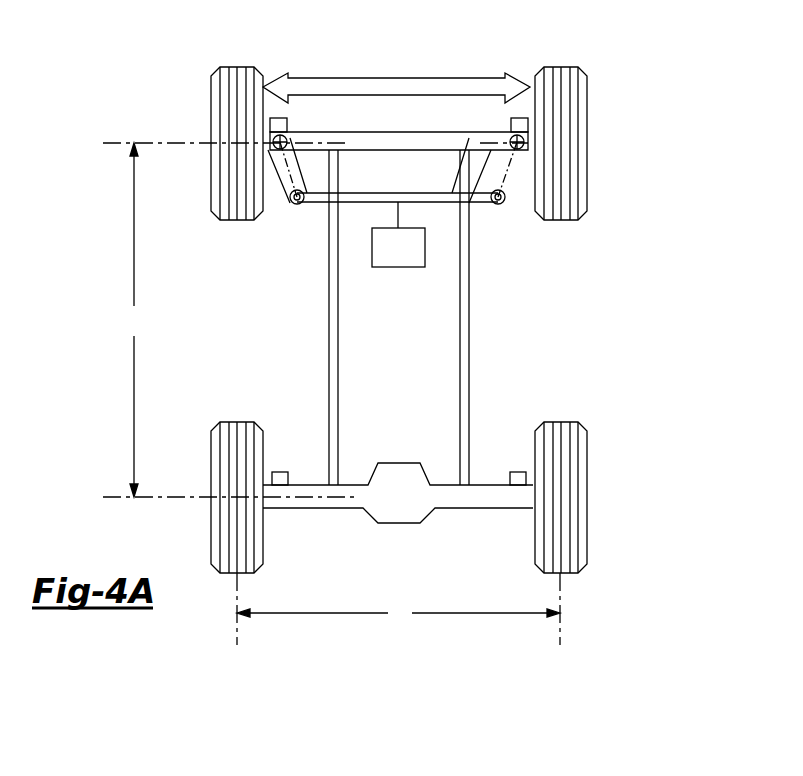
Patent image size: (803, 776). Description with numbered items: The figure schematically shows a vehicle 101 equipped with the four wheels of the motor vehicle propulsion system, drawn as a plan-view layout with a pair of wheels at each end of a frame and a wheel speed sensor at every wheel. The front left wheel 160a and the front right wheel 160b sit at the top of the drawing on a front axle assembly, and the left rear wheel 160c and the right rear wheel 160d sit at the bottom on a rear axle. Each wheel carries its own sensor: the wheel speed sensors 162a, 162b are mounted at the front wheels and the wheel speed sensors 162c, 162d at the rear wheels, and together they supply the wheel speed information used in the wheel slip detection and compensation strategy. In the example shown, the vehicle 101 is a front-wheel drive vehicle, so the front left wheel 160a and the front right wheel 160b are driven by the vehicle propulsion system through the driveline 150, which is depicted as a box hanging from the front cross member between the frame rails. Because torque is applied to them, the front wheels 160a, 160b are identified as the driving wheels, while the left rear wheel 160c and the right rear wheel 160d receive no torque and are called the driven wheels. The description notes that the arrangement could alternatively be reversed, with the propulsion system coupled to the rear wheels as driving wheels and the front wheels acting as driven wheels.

The vehicle 101 is at (157, 75).
The front left wheel 160a is at (211, 117).
The front right wheel 160b is at (587, 115).
The left rear wheel 160c is at (211, 540).
The right rear wheel 160d is at (587, 540).
The wheel speed sensor 162a is at (288, 122).
The wheel speed sensor 162b is at (511, 122).
The wheel speed sensor 162c is at (278, 471).
The wheel speed sensor 162d is at (517, 471).
The driveline 150 is at (411, 258).